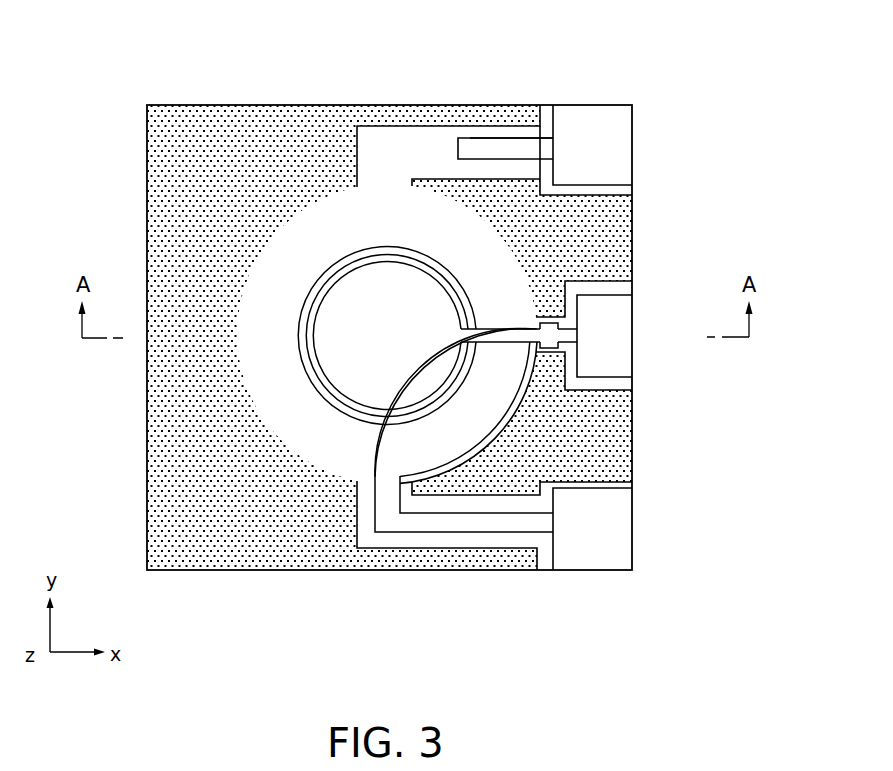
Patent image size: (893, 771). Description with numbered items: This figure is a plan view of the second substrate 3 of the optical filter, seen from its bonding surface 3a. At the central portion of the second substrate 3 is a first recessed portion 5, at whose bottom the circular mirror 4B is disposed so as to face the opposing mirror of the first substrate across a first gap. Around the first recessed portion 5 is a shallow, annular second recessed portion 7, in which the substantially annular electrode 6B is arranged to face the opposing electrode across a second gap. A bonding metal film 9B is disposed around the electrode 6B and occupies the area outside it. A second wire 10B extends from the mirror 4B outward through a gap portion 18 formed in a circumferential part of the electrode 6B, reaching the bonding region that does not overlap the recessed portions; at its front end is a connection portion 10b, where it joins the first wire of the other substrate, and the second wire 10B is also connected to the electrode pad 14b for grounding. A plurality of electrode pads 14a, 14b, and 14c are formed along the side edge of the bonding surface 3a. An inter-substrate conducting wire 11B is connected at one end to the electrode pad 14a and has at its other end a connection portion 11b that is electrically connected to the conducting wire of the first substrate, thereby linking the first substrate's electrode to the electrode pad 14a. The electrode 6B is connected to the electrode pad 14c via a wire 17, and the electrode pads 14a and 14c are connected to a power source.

The second substrate 3 is at (652, 92).
The bonding surface 3a is at (382, 142).
The mirror 4B is at (333, 365).
The first recessed portion 5 is at (303, 303).
The electrode 6B is at (335, 220).
The second recessed portion 7 is at (315, 195).
The bonding metal film 9B is at (165, 151).
The connection portion 10b is at (560, 342).
The second wire 10B is at (503, 340).
The connection portion 11b is at (469, 151).
The inter-substrate conducting wire 11B is at (513, 138).
The electrode pad 14a is at (615, 147).
The electrode pad 14b is at (607, 310).
The electrode pad 14c is at (612, 544).
The wire 17 is at (480, 520).
The gap portion 18 is at (518, 330).